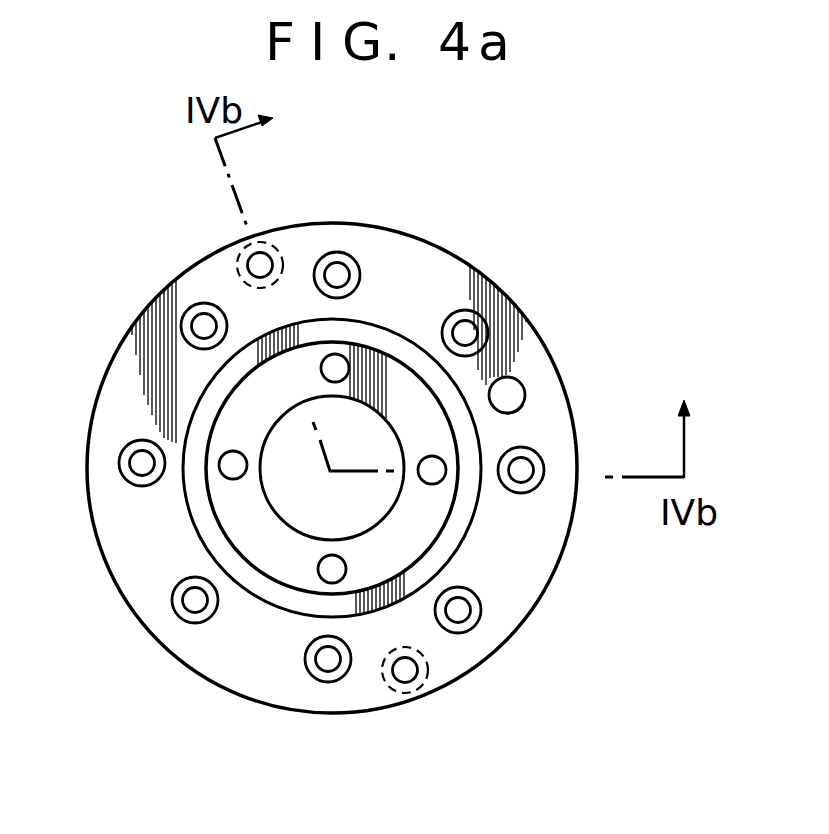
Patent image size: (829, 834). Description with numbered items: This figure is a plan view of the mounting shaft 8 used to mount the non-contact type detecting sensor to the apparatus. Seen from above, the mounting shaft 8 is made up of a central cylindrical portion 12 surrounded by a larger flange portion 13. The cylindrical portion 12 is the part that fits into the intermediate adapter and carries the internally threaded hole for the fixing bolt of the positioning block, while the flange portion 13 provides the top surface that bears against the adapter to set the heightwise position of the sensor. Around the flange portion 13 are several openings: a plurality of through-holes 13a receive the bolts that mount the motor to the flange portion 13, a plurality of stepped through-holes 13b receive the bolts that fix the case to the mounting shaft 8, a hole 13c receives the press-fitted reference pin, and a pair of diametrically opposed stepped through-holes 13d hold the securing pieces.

The mounting shaft 8 is at (112, 362).
The cylindrical portion 12 is at (200, 508).
The flange portion 13 is at (118, 405).
The through-holes 13a is at (325, 574).
The stepped through-holes 13b is at (187, 323).
The hole 13c is at (518, 394).
The stepped through-holes 13d is at (252, 264).